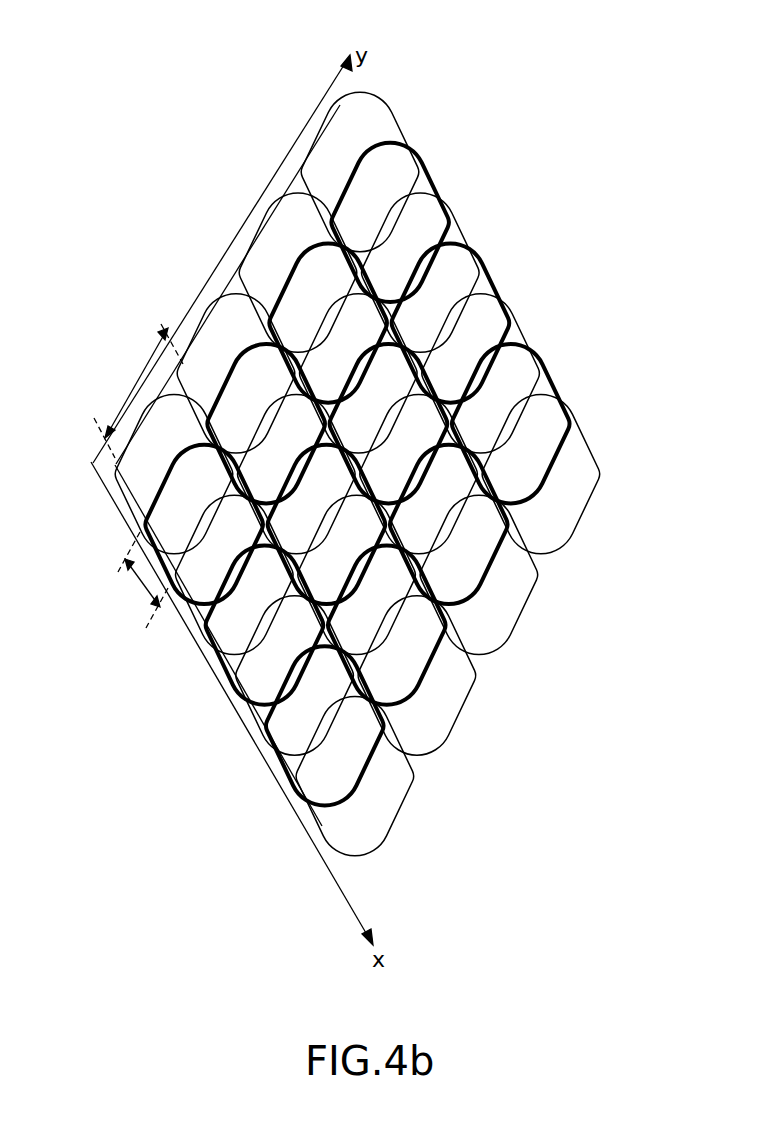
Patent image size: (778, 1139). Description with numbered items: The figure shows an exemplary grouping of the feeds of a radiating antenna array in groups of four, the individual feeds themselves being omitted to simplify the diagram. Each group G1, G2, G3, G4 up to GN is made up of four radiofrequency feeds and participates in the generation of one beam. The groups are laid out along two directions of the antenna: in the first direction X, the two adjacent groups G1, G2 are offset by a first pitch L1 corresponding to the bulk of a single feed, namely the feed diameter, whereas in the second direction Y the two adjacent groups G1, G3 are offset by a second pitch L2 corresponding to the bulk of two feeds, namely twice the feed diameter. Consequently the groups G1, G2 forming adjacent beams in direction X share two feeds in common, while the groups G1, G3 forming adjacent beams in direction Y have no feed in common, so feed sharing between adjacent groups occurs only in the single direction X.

The group of four feeds G1 is at (384, 99).
The group of four feeds G2 is at (437, 172).
The group of four feeds G3 is at (260, 230).
The group of four feeds G4 is at (293, 277).
The group of four feeds GN is at (402, 819).
The first pitch L1 is at (115, 580).
The second pitch L2 is at (115, 391).